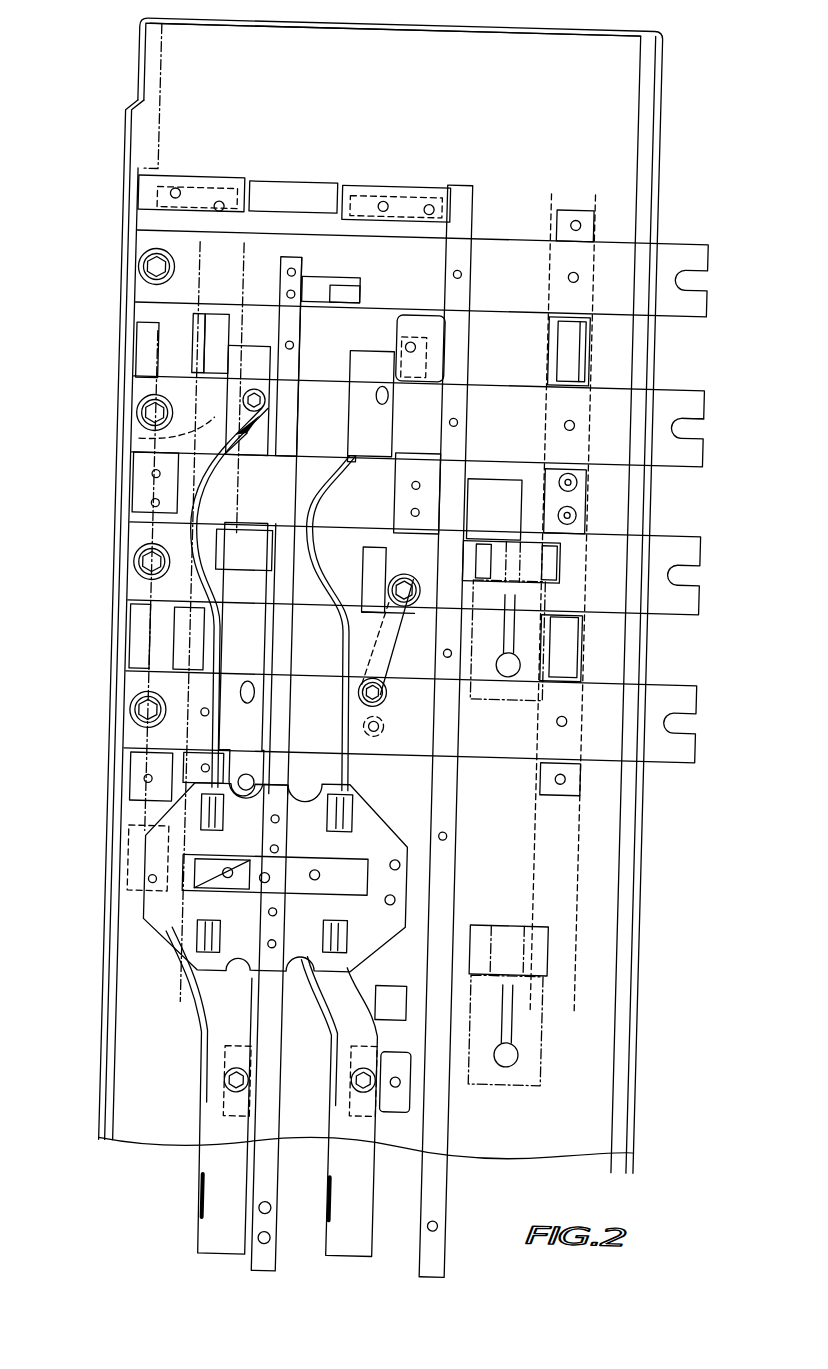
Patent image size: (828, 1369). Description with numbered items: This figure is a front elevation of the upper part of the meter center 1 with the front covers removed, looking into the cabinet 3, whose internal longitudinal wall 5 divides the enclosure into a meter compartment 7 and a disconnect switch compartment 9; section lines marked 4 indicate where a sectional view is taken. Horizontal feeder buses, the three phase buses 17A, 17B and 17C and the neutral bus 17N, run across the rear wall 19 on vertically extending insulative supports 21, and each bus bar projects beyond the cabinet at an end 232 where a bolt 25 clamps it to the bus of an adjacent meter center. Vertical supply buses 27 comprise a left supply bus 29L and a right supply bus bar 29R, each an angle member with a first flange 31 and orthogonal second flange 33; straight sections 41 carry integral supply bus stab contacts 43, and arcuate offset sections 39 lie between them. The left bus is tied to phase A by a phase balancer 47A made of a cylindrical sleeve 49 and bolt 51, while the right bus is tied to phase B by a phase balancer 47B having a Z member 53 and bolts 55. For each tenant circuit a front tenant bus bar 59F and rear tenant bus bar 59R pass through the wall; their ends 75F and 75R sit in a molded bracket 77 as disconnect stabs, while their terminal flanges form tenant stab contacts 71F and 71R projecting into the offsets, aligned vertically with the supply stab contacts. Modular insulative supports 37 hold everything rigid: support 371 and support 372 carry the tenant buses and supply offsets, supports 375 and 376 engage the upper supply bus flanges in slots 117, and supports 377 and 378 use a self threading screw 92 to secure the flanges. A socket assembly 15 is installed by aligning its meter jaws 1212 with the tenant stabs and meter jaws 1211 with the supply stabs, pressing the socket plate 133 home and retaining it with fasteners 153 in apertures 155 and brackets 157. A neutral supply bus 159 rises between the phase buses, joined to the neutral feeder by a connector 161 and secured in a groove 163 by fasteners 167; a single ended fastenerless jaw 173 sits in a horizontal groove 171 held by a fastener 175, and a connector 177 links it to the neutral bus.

The meter center 1 is at (738, 60).
The cabinet 3 is at (613, 28).
The section line 4- 4 is at (743, 742).
The internal longitudinal wall 5 is at (477, 797).
The meter compartment 7 is at (81, 1090).
The disconnect switch compartment 9 is at (612, 838).
The socket assembly 15 is at (160, 942).
The neutral bus 17N is at (686, 228).
The phase A feeder bus 17A is at (686, 374).
The phase B feeder bus 17B is at (684, 520).
The phase C feeder bus 17C is at (684, 670).
The rear wall 19 is at (458, 40).
The insulative support 21 is at (596, 200).
The end of bus bar 232 is at (714, 400).
The bolt 25 is at (148, 410).
The supply buses 27 is at (340, 1256).
The left supply bus 29L is at (220, 1252).
The right supply bus bar 29R is at (390, 1215).
The first flange 31 is at (166, 1173).
The second flange 33 is at (392, 1178).
The modular insulative support 37 is at (290, 992).
The modular insulative support 371 is at (400, 557).
The modular support 372 is at (292, 520).
The modular support 375 is at (412, 308).
The modular support 376 is at (270, 300).
The support 377 is at (438, 1115).
The support 378 is at (284, 1118).
The offset section 39 is at (185, 578).
The straight section 41 is at (227, 375).
The supply bus stab contact 43 is at (360, 422).
The phase balancer 47A is at (150, 446).
The phase balancer 47B is at (398, 734).
The cylindrical sleeve 49 is at (278, 410).
The bolt 51 is at (278, 395).
The Z member 53 is at (440, 700).
The bolts 55 is at (458, 566).
The front tenant bus bar 59F is at (440, 530).
The rear tenant bus bar 59R is at (352, 500).
The tenant stab contact 71F is at (342, 540).
The tenant stab contact 71R is at (185, 540).
The end of tenant bus 75F is at (512, 916).
The end of tenant bus 75R is at (552, 916).
The molded bracket 77 is at (552, 1025).
The self threading screw 92 is at (252, 1080).
The slot 117 is at (392, 356).
The meter jaws 1211 is at (190, 795).
The meter jaws 1212 is at (190, 930).
The socket plate 133 is at (402, 820).
The fastener 153 is at (172, 876).
The aperture 155 is at (160, 503).
The bracket 157 is at (147, 476).
The neutral supply bus 159 is at (320, 256).
The connector 161 is at (318, 285).
The vertical groove 163 is at (286, 790).
The fastener 167 is at (284, 845).
The horizontal groove 171 is at (347, 890).
The single ended fastenerless jaw 173 is at (222, 805).
The fastener 175 is at (244, 886).
The connector 177 is at (348, 842).